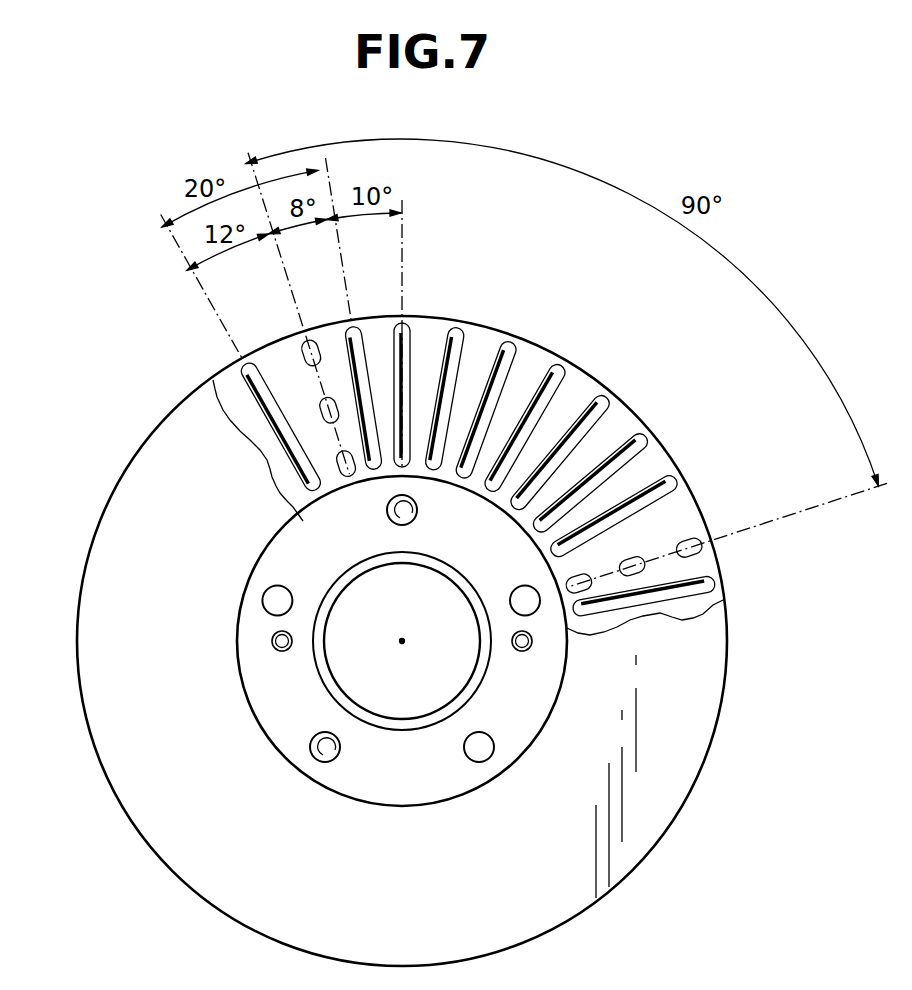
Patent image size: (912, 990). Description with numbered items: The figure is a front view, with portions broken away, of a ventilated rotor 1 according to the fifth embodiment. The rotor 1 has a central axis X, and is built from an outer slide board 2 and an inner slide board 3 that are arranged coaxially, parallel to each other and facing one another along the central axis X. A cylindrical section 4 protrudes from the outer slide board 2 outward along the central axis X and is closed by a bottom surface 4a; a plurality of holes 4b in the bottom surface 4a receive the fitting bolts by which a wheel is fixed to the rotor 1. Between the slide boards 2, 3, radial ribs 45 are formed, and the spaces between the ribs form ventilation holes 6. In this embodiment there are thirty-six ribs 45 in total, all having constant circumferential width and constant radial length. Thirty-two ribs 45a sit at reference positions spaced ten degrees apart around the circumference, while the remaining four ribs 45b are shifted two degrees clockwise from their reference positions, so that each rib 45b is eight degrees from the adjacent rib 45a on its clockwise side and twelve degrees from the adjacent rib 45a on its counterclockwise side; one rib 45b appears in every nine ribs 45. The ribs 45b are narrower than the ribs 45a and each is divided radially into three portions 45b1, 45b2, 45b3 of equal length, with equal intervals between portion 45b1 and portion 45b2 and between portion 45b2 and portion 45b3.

The ventilated rotor 1 is at (769, 679).
The slide board 2 is at (703, 600).
The slide board 3 is at (699, 729).
The cylindrical section 4 is at (374, 748).
The bottom surface 4a is at (490, 693).
The holes 4b is at (416, 513).
The ventilation holes 6 is at (592, 455).
The ribs 45 is at (590, 407).
The ribs 45a is at (354, 340).
The ribs 45b is at (118, 333).
The portion 45b1 is at (303, 360).
The portion 45b2 is at (321, 416).
The portion 45b3 is at (338, 468).
The central axis X is at (407, 641).